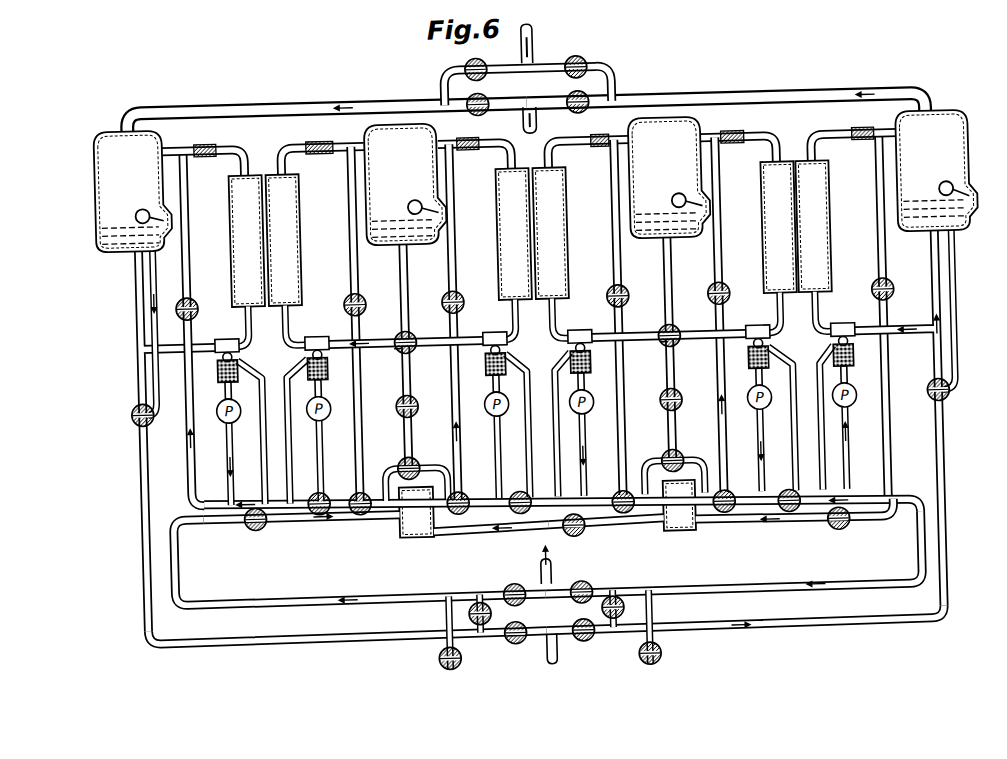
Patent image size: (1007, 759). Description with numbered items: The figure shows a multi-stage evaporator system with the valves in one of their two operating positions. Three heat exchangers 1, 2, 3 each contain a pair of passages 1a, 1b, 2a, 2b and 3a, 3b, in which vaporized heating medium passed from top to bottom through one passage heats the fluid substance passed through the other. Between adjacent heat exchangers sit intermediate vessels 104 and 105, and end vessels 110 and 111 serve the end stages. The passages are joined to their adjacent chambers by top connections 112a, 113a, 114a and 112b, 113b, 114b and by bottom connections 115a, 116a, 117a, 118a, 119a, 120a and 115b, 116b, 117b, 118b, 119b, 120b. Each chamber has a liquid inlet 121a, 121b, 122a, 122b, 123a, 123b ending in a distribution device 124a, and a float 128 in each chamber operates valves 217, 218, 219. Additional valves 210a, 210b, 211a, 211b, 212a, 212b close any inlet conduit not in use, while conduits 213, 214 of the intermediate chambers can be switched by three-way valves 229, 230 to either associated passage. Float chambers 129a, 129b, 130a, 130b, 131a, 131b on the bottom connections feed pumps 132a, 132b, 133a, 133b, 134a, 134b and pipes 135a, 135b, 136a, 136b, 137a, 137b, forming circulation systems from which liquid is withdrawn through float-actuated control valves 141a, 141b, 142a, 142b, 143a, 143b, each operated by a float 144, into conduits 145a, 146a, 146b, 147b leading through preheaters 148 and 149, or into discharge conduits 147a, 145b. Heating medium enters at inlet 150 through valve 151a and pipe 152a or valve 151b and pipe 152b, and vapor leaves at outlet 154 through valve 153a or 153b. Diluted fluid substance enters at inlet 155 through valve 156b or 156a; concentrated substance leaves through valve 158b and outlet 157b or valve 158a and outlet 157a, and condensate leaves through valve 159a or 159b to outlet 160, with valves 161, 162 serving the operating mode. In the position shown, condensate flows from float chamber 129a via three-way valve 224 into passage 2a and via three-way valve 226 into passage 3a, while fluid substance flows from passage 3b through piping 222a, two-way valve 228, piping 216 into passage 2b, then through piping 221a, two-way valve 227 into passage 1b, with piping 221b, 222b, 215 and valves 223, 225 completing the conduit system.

The heat exchanger 1 is at (274, 260).
The heat exchanger passage 1a is at (247, 261).
The heat exchanger passage 1b is at (301, 272).
The heat exchanger 2 is at (540, 253).
The heat exchanger passage 2a is at (513, 254).
The heat exchanger passage 2b is at (569, 272).
The heat exchanger 3 is at (805, 246).
The heat exchanger passage 3a is at (778, 247).
The heat exchanger passage 3b is at (833, 272).
The intermediate vessel 104 is at (432, 140).
The intermediate vessel 105 is at (699, 140).
The end vessel 110 is at (100, 162).
The end vessel 111 is at (972, 155).
The top connection 112a is at (178, 143).
The top connection 112b is at (299, 140).
The top connection 113a is at (466, 140).
The top connection 113b is at (576, 140).
The top connection 114a is at (735, 140).
The top connection 114b is at (836, 140).
The bottom connection 115a is at (186, 338).
The bottom connection 115b is at (402, 330).
The bottom connection 116a is at (248, 325).
The bottom connection 116b is at (322, 325).
The bottom connection 117a is at (455, 335).
The bottom connection 117b is at (667, 330).
The bottom connection 118a is at (505, 332).
The bottom connection 118b is at (574, 332).
The bottom connection 119a is at (718, 336).
The bottom connection 119b is at (938, 280).
The bottom connection 120a is at (775, 315).
The bottom connection 120b is at (838, 332).
The liquid inlet 121a is at (281, 633).
The liquid inlet 121b is at (337, 325).
The liquid inlet 122a is at (477, 321).
The liquid inlet 122b is at (603, 318).
The liquid inlet 123a is at (742, 314).
The liquid inlet 123b is at (747, 630).
The distribution device 124a is at (539, 155).
The float 128 is at (141, 206).
The float chamber 129a is at (246, 350).
The float chamber 129b is at (316, 362).
The float chamber 130a is at (516, 352).
The float chamber 130b is at (585, 360).
The float chamber 131a is at (778, 352).
The float chamber 131b is at (826, 362).
The pump 132a is at (226, 391).
The pump 132b is at (322, 398).
The pump 133a is at (492, 392).
The pump 133b is at (589, 398).
The pump 134a is at (755, 396).
The pump 134b is at (853, 402).
The pipe 135a is at (228, 455).
The pipe 135b is at (321, 456).
The pipe 136a is at (494, 452).
The pipe 136b is at (584, 452).
The pipe 137a is at (757, 455).
The pipe 137b is at (847, 460).
The control valve 141a is at (252, 524).
The control valve 141b is at (316, 488).
The control valve 142a is at (517, 492).
The control valve 142b is at (566, 538).
The control valve 143a is at (786, 497).
The control valve 143b is at (835, 538).
The float 144 is at (218, 362).
The conduit 145a is at (280, 516).
The conduit 145b is at (283, 595).
The conduit 146a is at (608, 526).
The conduit 146b is at (462, 534).
The conduit 147a is at (742, 592).
The conduit 147b is at (740, 530).
The preheater 148 is at (402, 487).
The preheater 149 is at (664, 487).
The inlet 150 is at (543, 120).
The valve 151a is at (490, 95).
The valve 151b is at (578, 96).
The pipe 152a is at (272, 102).
The pipe 152b is at (730, 97).
The valve 153a is at (486, 58).
The valve 153b is at (588, 59).
The discharge outlet 154 is at (542, 42).
The inlet 155 is at (566, 648).
The valve 156a is at (508, 644).
The valve 156b is at (581, 643).
The outlet 157a is at (654, 658).
The outlet 157b is at (432, 659).
The valve 158a is at (650, 638).
The valve 158b is at (448, 642).
The valve 159a is at (580, 584).
The valve 159b is at (507, 584).
The discharge outlet 160 is at (547, 572).
The valve 161 is at (472, 604).
The valve 162 is at (610, 600).
The valve 210a is at (196, 299).
The valve 210b is at (355, 295).
The valve 211a is at (462, 296).
The valve 211b is at (626, 292).
The valve 212a is at (727, 292).
The valve 212b is at (882, 292).
The conduit 213 is at (402, 285).
The conduit 214 is at (666, 298).
The piping 215 is at (402, 377).
The piping 216 is at (666, 383).
The valve 217 is at (130, 406).
The valve 218 is at (395, 404).
The valve 219 is at (659, 405).
The piping 221a is at (383, 470).
The piping 221b is at (446, 465).
The piping 222a is at (643, 470).
The piping 222b is at (703, 467).
The valve 223 is at (357, 489).
The three-way valve 224 is at (460, 491).
The valve 225 is at (620, 494).
The three-way valve 226 is at (724, 496).
The two-way valve 227 is at (398, 458).
The two-way valve 228 is at (666, 454).
The three-way valve 229 is at (398, 347).
The three-way valve 230 is at (666, 347).